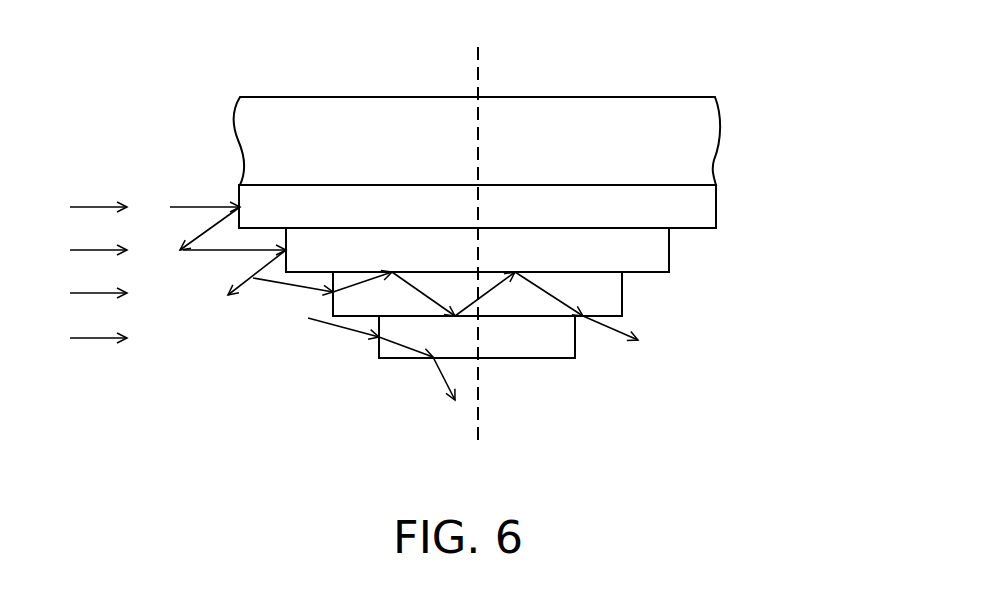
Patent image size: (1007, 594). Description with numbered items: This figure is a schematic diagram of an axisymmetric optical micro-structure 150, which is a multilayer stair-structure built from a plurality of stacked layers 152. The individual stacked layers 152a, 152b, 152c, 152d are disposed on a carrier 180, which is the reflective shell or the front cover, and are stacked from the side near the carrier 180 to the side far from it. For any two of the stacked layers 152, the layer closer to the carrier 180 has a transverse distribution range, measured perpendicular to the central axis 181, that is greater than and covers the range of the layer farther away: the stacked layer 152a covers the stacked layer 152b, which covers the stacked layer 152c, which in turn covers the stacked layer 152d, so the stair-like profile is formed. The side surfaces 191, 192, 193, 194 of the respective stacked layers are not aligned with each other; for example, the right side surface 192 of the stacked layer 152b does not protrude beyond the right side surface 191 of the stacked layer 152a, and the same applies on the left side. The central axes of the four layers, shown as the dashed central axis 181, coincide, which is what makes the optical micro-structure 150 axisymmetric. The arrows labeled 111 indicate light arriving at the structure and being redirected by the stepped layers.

The light beam 111 is at (205, 207).
The optical micro-structure 150 is at (632, 408).
The stacked layers 152 is at (569, 295).
The stacked layer 152a is at (569, 229).
The stacked layer 152b is at (593, 269).
The stacked layer 152c is at (616, 310).
The stacked layer 152d is at (639, 361).
The carrier 180 is at (690, 139).
The central axis 181 is at (565, 220).
The side surface 191 is at (716, 201).
The side surface 192 is at (669, 245).
The side surface 193 is at (622, 290).
The side surface 194 is at (575, 347).